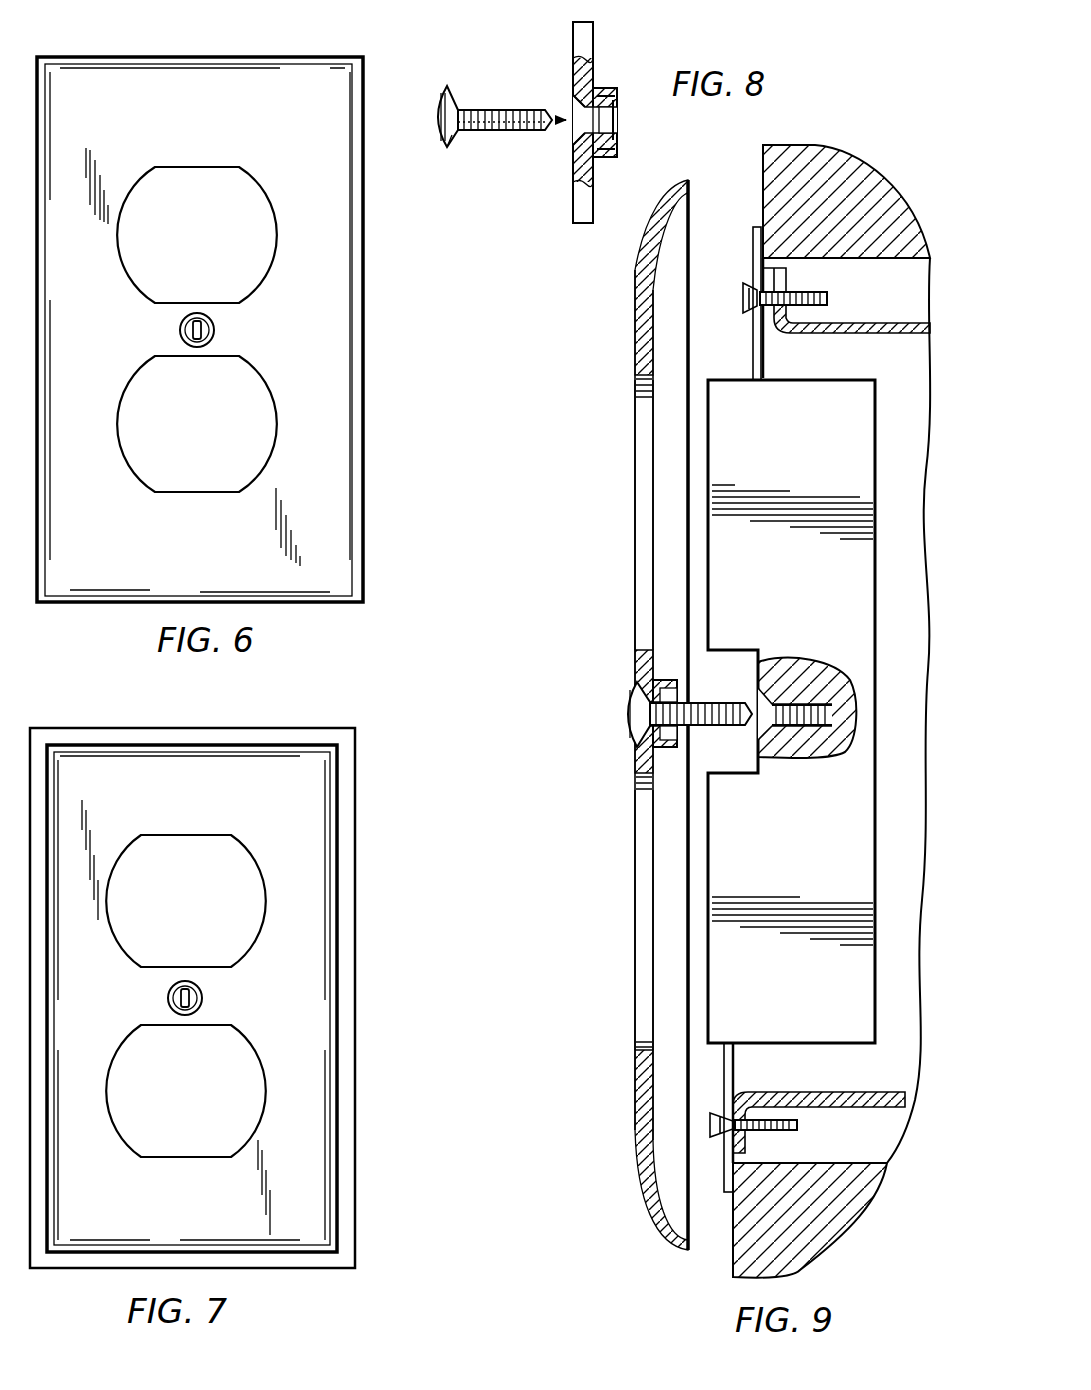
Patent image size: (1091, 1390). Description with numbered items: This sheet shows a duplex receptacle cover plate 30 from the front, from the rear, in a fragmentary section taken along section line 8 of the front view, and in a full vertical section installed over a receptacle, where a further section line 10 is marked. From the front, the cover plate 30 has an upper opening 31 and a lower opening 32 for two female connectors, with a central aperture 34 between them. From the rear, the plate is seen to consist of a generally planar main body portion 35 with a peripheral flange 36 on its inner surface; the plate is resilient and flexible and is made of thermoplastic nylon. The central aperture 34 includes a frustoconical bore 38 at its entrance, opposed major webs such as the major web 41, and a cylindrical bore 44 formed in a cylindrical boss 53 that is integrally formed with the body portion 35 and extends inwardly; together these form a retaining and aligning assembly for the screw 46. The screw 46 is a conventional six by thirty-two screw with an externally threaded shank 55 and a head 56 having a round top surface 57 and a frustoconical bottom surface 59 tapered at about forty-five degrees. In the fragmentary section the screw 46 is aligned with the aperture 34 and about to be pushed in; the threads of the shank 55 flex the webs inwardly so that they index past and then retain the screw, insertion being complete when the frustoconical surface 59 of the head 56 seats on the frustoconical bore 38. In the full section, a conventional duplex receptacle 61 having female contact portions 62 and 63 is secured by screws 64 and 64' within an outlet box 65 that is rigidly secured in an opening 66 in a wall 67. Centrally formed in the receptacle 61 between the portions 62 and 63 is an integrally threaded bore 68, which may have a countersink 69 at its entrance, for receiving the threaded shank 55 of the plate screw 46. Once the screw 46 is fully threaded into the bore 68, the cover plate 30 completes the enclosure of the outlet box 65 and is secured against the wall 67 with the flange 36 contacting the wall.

In FIG. 6, the section line 8— 8 is at (172, 268).
In FIG. 9, the section line 10— 10 is at (620, 714).
In FIG. 6, the duplex receptacle cover plate 30 is at (106, 52).
In FIG. 7, the duplex receptacle cover plate 30 is at (347, 724).
In FIG. 8, the duplex receptacle cover plate 30 is at (600, 50).
In FIG. 9, the duplex receptacle cover plate 30 is at (634, 268).
In FIG. 6, the upper opening 31 is at (193, 168).
In FIG. 7, the upper opening 31 is at (196, 835).
In FIG. 8, the upper opening 31 is at (595, 26).
In FIG. 9, the upper opening 31 is at (638, 383).
In FIG. 6, the lower opening 32 is at (191, 493).
In FIG. 7, the lower opening 32 is at (189, 1157).
In FIG. 8, the lower opening 32 is at (592, 200).
In FIG. 9, the lower opening 32 is at (638, 1050).
In FIG. 6, the central aperture 34 is at (222, 327).
In FIG. 7, the central aperture 34 is at (208, 991).
In FIG. 8, the central aperture 34 is at (558, 96).
In FIG. 9, the central aperture 34 is at (624, 742).
In FIG. 7, the main body portion 35 is at (308, 818).
In FIG. 7, the peripheral flange 36 is at (344, 851).
In FIG. 9, the peripheral flange 36 is at (692, 186).
In FIG. 6, the frustoconical bore 38 is at (180, 329).
In FIG. 8, the frustoconical bore 38 is at (576, 141).
In FIG. 8, the major web 41 is at (614, 112).
In FIG. 8, the cylindrical bore 44 is at (618, 140).
In FIG. 8, the screw 46 is at (478, 115).
In FIG. 9, the screw 46 is at (671, 690).
In FIG. 7, the cylindrical boss 53 is at (168, 996).
In FIG. 8, the cylindrical boss 53 is at (617, 90).
In FIG. 9, the cylindrical boss 53 is at (668, 684).
In FIG. 8, the shank 55 is at (501, 106).
In FIG. 9, the shank 55 is at (697, 702).
In FIG. 8, the head 56 is at (434, 96).
In FIG. 8, the round top surface 57 is at (441, 147).
In FIG. 8, the frustoconical bottom surface 59 is at (449, 147).
In FIG. 9, the duplex receptacle 61 is at (858, 460).
In FIG. 9, the female contact portion 62 is at (757, 378).
In FIG. 9, the female contact portion 63 is at (720, 1045).
In FIG. 9, the screw 64 is at (772, 263).
In FIG. 9, the screw 64' is at (746, 1148).
In FIG. 9, the outlet box 65 is at (852, 320).
In FIG. 9, the opening 66 is at (818, 260).
In FIG. 9, the wall 67 is at (762, 152).
In FIG. 9, the threaded bore 68 is at (818, 730).
In FIG. 9, the countersink 69 is at (765, 722).